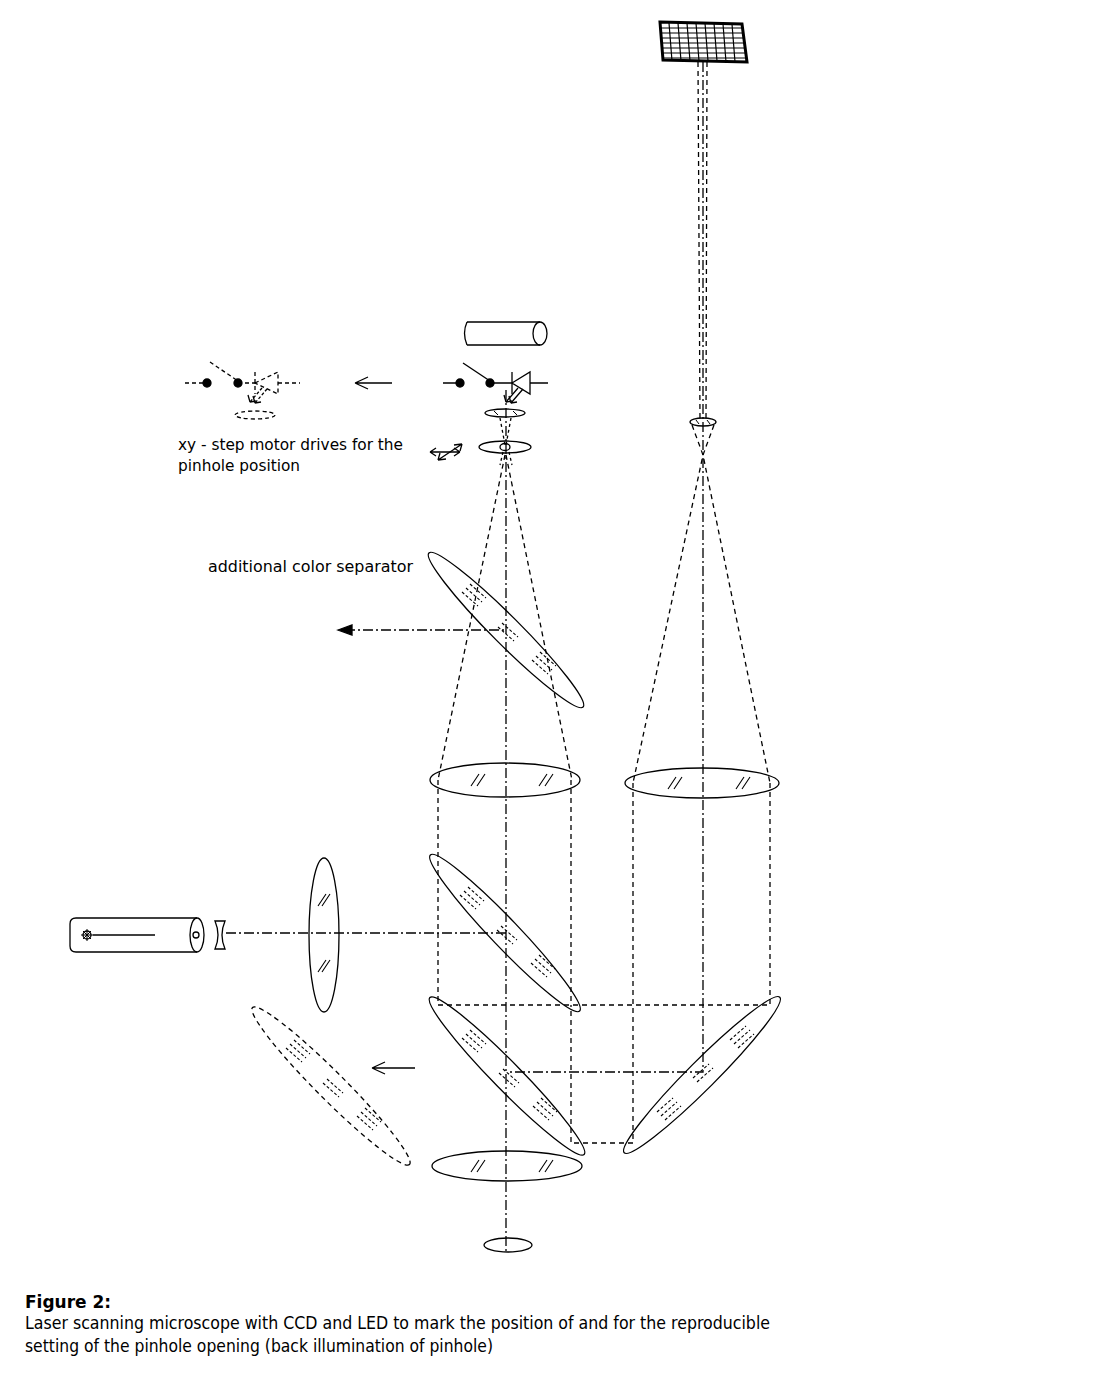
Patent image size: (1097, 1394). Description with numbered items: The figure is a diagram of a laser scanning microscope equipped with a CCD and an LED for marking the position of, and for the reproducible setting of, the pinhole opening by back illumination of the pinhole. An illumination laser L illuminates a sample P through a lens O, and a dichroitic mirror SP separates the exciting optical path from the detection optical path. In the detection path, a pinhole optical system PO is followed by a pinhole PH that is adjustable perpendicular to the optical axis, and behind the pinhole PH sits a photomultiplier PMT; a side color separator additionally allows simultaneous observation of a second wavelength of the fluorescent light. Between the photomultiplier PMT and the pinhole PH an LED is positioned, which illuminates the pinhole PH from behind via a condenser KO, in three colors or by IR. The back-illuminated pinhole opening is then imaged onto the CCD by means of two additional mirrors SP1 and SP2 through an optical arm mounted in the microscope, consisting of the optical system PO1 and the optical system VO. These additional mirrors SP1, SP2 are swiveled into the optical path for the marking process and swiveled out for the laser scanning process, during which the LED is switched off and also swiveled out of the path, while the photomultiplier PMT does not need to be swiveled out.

The element CCD is at (605, 45).
The photomultiplier PMT is at (495, 316).
The element LED is at (542, 383).
The condenser KO is at (532, 413).
The pinhole PH is at (505, 449).
The optical system VO is at (734, 424).
The pinhole optical system PO is at (485, 780).
The optical system PO1 is at (727, 783).
The dichroitic mirror SP is at (421, 850).
The additional mirror SP1 is at (507, 1076).
The additional mirror SP2 is at (701, 1074).
The illumination laser L is at (147, 954).
The lens O is at (520, 1180).
The sample P is at (534, 1246).